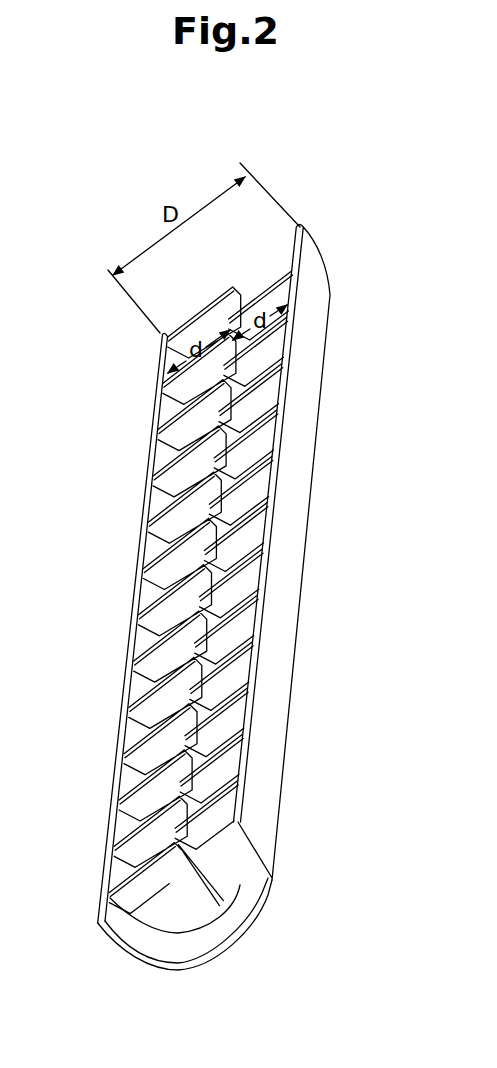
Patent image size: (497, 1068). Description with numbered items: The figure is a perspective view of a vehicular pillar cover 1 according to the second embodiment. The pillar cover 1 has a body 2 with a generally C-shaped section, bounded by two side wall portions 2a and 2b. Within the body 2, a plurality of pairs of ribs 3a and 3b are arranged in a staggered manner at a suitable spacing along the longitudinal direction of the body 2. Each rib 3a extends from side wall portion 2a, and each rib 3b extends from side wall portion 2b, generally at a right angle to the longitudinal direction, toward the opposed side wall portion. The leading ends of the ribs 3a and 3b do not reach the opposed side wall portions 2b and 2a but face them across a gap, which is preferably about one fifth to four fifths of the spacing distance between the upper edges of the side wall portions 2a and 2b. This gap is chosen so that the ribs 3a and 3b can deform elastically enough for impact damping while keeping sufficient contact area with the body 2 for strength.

The vehicular pillar cover 1 is at (316, 217).
The body 2 is at (171, 991).
The side wall portion 2a is at (283, 621).
The side wall portion 2b is at (128, 649).
The rib 3a is at (258, 453).
The rib 3b is at (160, 475).